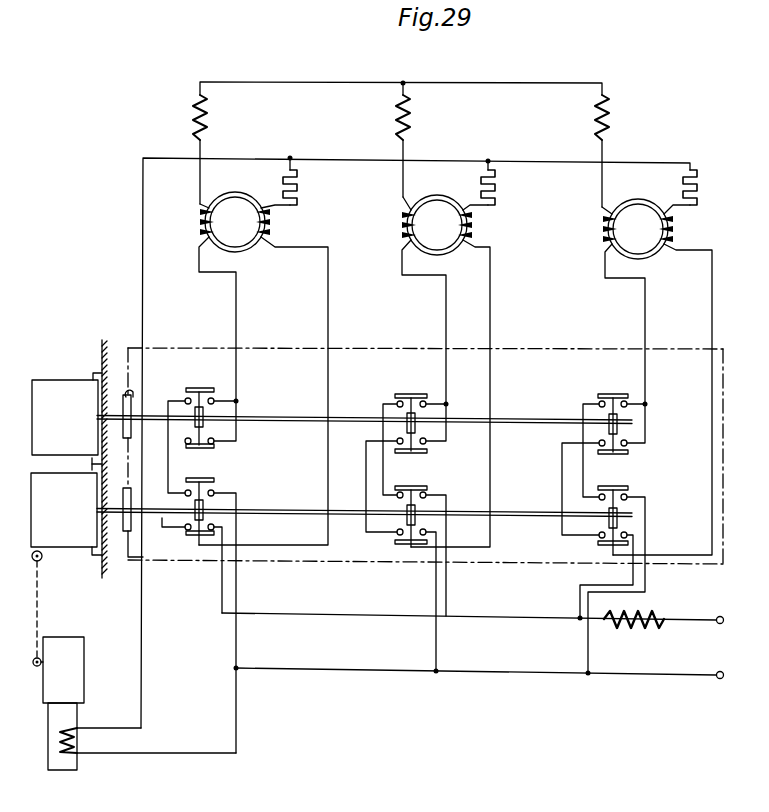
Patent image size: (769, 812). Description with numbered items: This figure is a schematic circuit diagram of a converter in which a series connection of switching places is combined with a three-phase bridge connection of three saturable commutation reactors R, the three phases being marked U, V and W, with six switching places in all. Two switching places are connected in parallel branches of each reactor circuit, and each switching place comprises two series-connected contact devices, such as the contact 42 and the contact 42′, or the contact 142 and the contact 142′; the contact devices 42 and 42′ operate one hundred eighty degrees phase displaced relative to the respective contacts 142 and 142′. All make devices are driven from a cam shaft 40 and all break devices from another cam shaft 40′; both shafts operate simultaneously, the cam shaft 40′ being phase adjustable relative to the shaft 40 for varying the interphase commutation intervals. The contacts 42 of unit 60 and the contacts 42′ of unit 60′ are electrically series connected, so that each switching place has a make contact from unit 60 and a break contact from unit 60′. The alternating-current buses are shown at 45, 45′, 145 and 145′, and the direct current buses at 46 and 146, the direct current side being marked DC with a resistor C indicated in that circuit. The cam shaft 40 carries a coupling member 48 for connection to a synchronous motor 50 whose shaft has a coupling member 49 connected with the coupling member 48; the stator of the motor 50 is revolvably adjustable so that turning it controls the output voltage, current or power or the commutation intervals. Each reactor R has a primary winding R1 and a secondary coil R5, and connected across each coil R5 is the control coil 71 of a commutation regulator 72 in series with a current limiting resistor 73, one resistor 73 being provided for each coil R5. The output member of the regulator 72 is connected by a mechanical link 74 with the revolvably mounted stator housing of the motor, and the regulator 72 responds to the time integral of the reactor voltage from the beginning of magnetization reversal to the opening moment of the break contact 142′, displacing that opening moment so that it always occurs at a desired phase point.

The alternating-current phase U is at (210, 117).
The phase resistor V is at (416, 117).
The phase resistor W is at (617, 117).
The current limiting resistor 73 is at (492, 186).
The reactor R is at (237, 193).
The contact winding R1 is at (393, 225).
The secondary coil R5 is at (480, 225).
The unit 60 is at (383, 342).
The unit 60′ is at (305, 562).
The synchronous motor 50 is at (60, 380).
The coupling member 48 is at (120, 387).
The coupling member 49 is at (125, 438).
The contact device 42 is at (199, 388).
The contact device 42′ is at (207, 480).
The alternating-current bus 45 is at (245, 392).
The alternating-current bus 45′ is at (168, 434).
The contact device 142 is at (200, 447).
The contact device 142′ is at (190, 535).
The alternating-current bus 145 is at (233, 441).
The alternating-current bus 145′ is at (162, 521).
The cam shaft 40 is at (289, 416).
The cam shaft 40′ is at (289, 509).
The direct current bus 46 is at (305, 615).
The direct current bus 146 is at (316, 672).
The resistor C is at (646, 612).
The DC supply terminals DC is at (717, 625).
The mechanical link 74 is at (40, 614).
The commutation regulator 72 is at (85, 666).
The control coil 71 is at (78, 741).